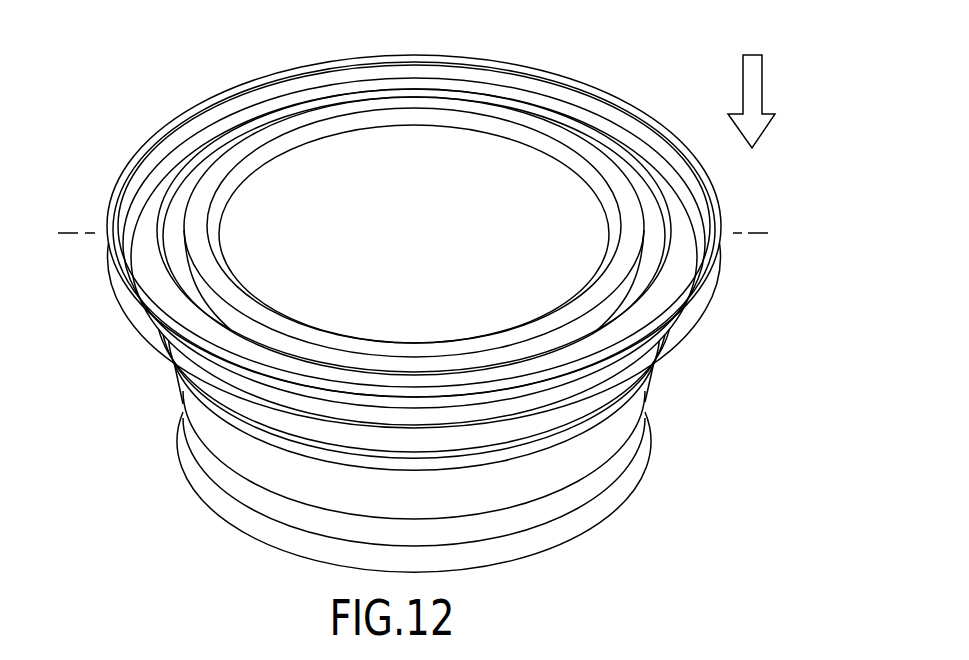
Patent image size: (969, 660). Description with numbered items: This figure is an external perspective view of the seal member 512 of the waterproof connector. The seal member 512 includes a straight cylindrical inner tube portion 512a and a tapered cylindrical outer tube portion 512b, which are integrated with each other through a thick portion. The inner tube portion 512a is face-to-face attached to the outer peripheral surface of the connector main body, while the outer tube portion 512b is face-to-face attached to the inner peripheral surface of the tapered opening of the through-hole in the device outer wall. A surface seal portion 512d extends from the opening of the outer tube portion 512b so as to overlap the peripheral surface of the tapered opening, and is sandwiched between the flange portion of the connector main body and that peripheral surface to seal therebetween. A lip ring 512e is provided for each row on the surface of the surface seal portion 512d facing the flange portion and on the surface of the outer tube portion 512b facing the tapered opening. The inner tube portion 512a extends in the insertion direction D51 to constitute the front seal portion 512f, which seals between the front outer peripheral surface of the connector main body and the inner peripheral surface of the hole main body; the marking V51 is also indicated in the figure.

The seal member 512 is at (172, 502).
The inner tube portion 512a is at (413, 103).
The outer tube portion 512b is at (566, 413).
The surface seal portion 512d is at (172, 122).
The lip ring 512e is at (758, 199).
The front seal portion 512f is at (570, 518).
The insertion direction D51 is at (743, 83).
The virtual plane V51 is at (68, 236).